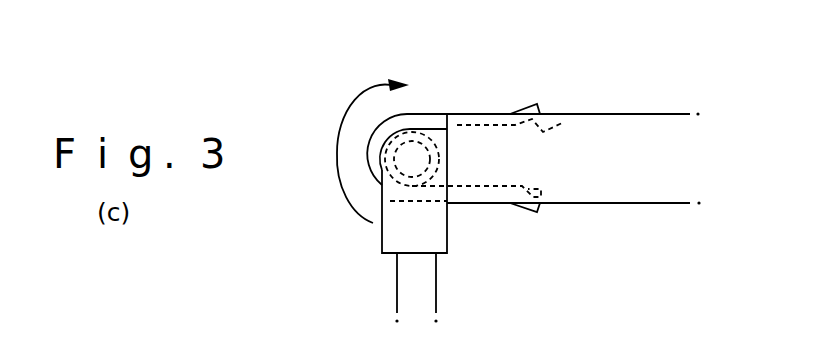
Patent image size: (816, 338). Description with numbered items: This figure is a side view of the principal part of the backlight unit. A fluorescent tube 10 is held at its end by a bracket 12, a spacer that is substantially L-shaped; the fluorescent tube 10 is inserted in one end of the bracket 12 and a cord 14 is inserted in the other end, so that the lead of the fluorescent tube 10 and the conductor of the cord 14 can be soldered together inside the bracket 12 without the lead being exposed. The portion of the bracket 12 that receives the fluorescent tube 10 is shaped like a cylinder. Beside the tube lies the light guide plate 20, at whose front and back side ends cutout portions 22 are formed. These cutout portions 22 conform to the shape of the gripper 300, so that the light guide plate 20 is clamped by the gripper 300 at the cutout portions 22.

The fluorescent tube 10 is at (414, 124).
The bracket 12 is at (392, 238).
The cord 14 is at (408, 286).
The light guide plate 20 is at (633, 146).
The cutout portion 22 is at (533, 124).
The gripper 300 is at (480, 116).